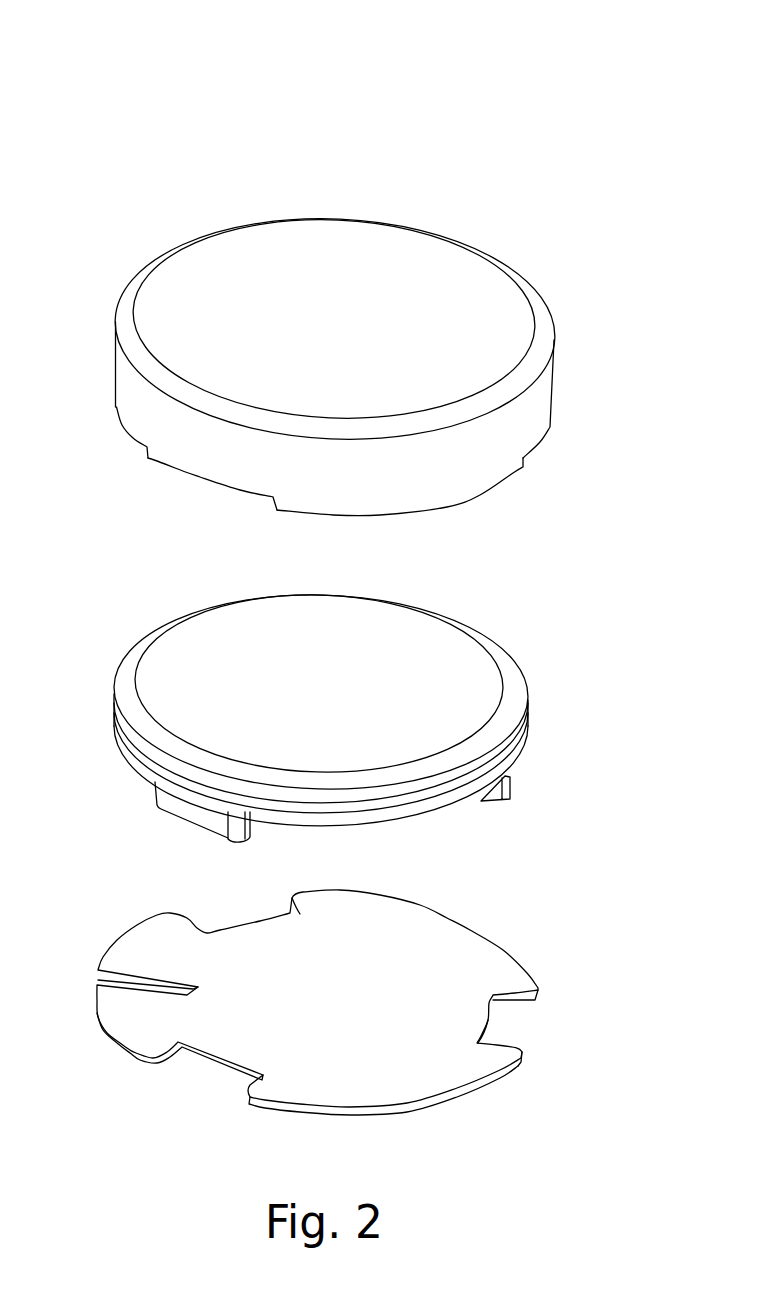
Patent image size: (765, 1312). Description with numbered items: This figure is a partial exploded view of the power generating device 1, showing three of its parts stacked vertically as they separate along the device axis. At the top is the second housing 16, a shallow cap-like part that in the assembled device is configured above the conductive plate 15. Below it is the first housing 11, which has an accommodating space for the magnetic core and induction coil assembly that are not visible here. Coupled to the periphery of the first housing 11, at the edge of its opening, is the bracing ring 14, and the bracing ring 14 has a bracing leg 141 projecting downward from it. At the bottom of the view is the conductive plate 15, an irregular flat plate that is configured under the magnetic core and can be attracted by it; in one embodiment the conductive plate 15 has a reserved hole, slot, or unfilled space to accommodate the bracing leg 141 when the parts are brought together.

The power generating device 1 is at (351, 52).
The first housing 11 is at (510, 678).
The bracing ring 14 is at (527, 755).
The bracing leg 141 is at (167, 813).
The conductive plate 15 is at (502, 1077).
The second housing 16 is at (542, 415).